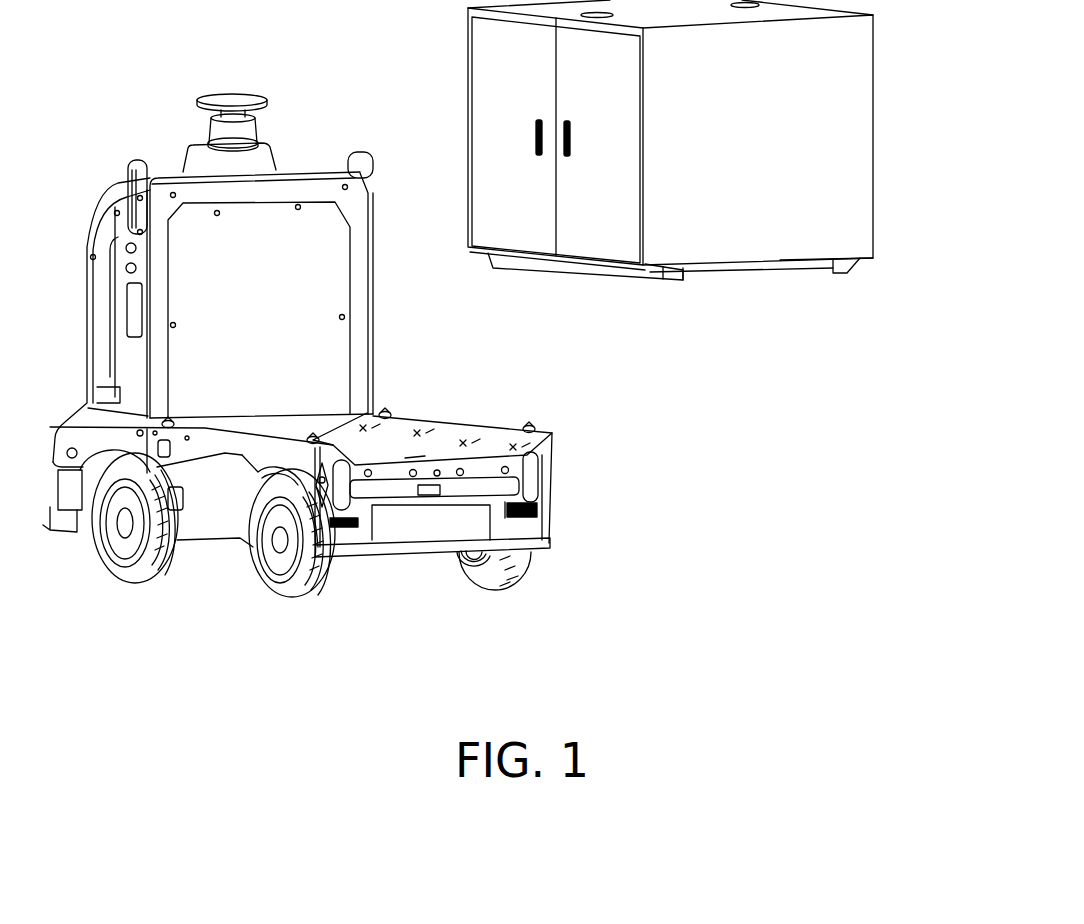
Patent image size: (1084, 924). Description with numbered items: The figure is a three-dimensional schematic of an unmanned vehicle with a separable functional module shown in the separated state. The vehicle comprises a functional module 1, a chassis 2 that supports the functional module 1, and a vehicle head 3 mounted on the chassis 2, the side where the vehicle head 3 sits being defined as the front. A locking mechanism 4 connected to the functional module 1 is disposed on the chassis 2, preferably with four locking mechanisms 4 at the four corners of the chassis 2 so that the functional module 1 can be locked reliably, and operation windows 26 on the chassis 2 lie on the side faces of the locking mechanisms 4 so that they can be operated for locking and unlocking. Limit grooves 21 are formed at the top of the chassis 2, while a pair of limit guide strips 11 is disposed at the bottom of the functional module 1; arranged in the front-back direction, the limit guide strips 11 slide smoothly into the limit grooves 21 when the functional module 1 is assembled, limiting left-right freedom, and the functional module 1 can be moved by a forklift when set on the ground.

The functional module 1 is at (857, 210).
The limit guide strips 11 is at (820, 273).
The chassis 2 is at (460, 425).
The limit grooves 21 is at (415, 458).
The vehicle head 3 is at (240, 227).
The locking mechanism 4 is at (385, 413).
The operation windows 26 is at (290, 497).